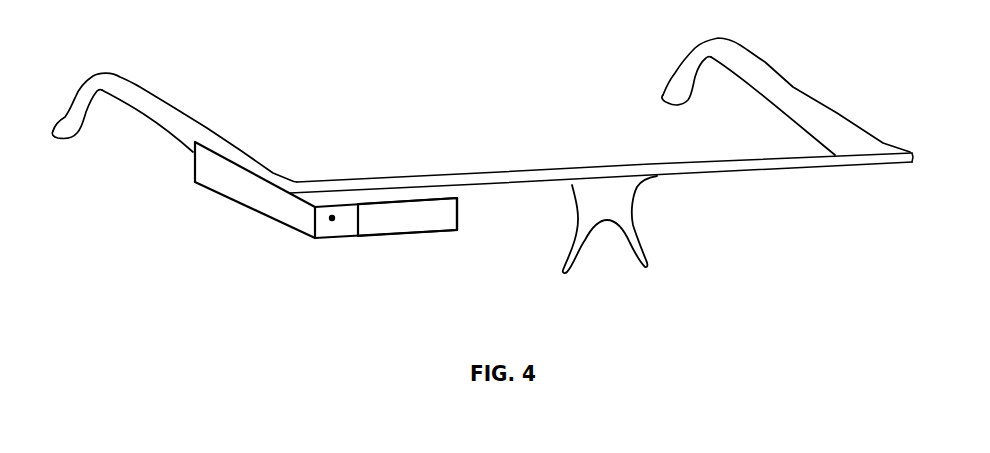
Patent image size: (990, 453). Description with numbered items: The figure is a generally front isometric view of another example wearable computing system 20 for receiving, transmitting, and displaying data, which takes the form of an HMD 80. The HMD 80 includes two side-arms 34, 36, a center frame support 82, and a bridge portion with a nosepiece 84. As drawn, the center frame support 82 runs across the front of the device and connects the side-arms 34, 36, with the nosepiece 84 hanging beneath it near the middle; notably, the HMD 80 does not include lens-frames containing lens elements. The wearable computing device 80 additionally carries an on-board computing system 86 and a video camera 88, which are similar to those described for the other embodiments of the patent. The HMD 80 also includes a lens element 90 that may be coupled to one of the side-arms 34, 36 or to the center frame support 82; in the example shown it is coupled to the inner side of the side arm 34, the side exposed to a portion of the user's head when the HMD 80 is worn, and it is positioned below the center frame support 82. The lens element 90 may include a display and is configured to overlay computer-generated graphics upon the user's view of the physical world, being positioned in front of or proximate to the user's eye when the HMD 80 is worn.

The system 20 is at (513, 157).
The side-arm 34 is at (157, 115).
The side-arm 36 is at (755, 63).
The HMD 80 is at (632, 196).
The center frame support 82 is at (502, 177).
The nosepiece 84 is at (628, 217).
The on-board computing system 86 is at (232, 200).
The video camera 88 is at (332, 220).
The lens element 90 is at (410, 233).